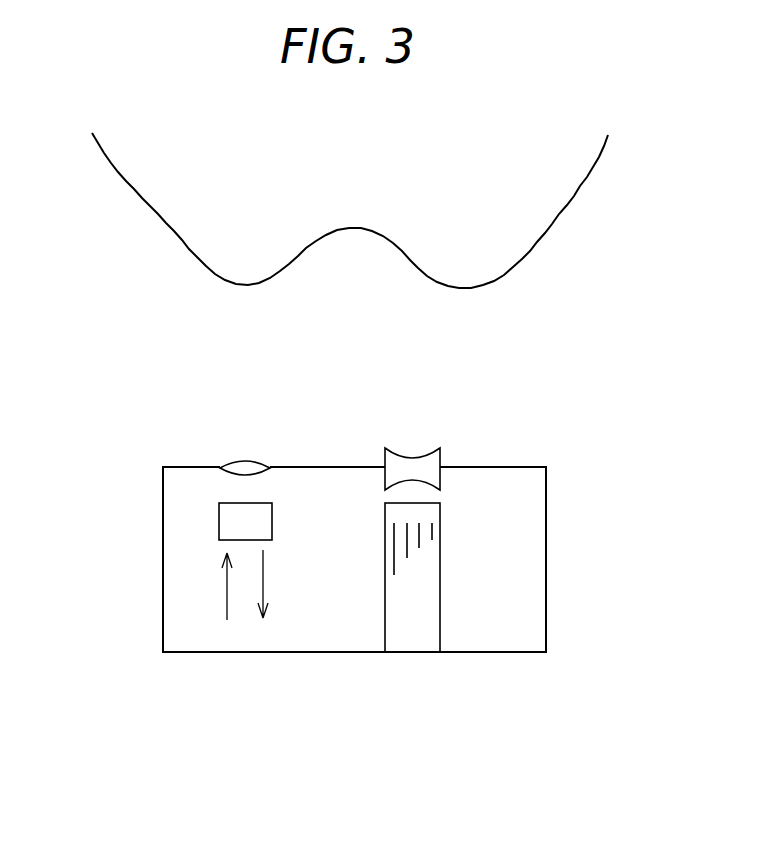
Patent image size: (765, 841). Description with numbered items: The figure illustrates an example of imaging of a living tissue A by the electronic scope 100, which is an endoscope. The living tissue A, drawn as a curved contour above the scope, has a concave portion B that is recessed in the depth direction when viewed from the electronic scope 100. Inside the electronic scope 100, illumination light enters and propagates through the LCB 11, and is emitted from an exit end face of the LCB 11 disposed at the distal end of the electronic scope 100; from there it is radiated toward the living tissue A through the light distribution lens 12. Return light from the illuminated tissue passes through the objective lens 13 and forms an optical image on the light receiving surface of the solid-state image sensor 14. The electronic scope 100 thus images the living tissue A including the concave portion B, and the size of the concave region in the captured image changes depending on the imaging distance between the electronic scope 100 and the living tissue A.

The LCB 11 is at (440, 585).
The light distribution lens 12 is at (415, 457).
The objective lens 13 is at (248, 462).
The solid-state image sensor 14 is at (272, 520).
The electronic scope 100 is at (546, 562).
The living tissue A is at (475, 288).
The concave portion B is at (374, 288).